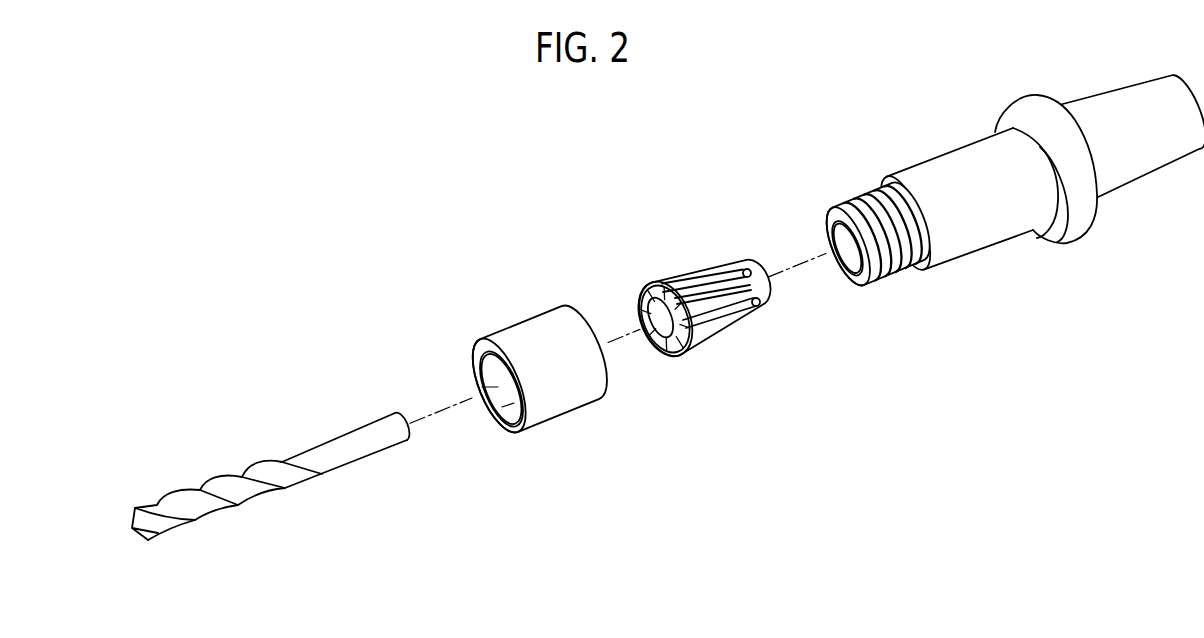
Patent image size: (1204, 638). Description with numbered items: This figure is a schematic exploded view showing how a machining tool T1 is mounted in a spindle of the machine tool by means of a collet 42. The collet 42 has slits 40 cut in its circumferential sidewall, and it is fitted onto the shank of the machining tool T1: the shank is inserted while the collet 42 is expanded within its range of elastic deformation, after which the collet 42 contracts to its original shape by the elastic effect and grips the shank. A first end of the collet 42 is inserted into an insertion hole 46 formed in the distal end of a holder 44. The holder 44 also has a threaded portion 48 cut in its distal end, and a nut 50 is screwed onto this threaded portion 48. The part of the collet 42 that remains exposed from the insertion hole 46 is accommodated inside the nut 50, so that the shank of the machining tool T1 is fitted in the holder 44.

The machining tool T1 is at (222, 515).
The nut 50 is at (525, 345).
The slits 40 is at (702, 285).
The collet 42 is at (663, 349).
The holder 44 is at (1123, 172).
The insertion hole 46 is at (836, 229).
The threaded portion 48 is at (887, 267).